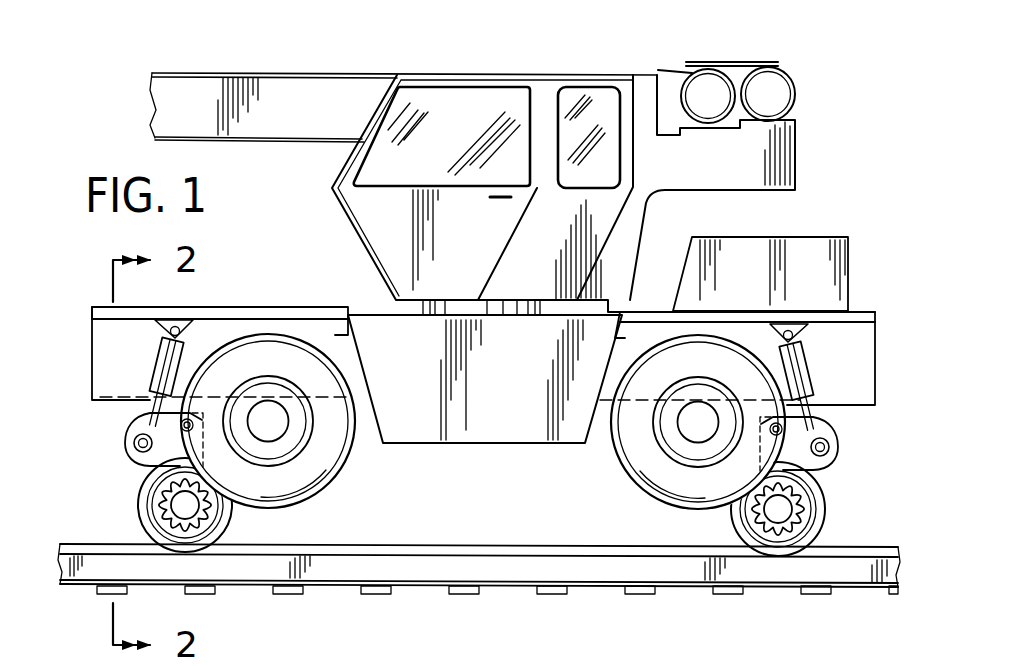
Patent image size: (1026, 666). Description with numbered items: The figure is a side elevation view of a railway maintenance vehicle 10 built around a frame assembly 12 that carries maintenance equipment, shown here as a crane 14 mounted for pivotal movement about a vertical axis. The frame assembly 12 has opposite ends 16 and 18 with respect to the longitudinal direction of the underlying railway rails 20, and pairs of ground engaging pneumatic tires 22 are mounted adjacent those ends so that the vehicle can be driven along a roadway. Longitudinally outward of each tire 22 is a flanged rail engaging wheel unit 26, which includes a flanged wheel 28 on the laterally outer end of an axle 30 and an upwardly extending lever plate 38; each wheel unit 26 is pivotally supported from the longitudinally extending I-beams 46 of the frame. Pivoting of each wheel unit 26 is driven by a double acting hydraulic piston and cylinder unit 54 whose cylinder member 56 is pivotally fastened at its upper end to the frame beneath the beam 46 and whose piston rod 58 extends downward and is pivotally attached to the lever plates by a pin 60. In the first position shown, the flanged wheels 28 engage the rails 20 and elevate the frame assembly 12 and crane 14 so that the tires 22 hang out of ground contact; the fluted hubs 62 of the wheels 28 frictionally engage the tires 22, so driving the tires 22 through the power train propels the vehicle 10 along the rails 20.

The railway maintenance vehicle 10 is at (847, 122).
The frame assembly 12 is at (667, 242).
The crane 14 is at (448, 72).
The end 16 is at (87, 287).
The end 18 is at (862, 237).
The railway rails 20 is at (650, 597).
The ground engaging pneumatic tires 22 is at (330, 490).
The flanged rail engaging wheel unit 26 is at (130, 462).
The flanged rail engaging wheel 28 is at (143, 513).
The axle 30 is at (280, 420).
The lever plate 38 is at (152, 460).
The I-beam 46 is at (303, 330).
The double acting hydraulic piston and cylinder unit 54 is at (150, 372).
The cylinder member 56 is at (163, 350).
The piston rod 58 is at (155, 412).
The pin 60 is at (134, 443).
The hub 62 is at (203, 515).